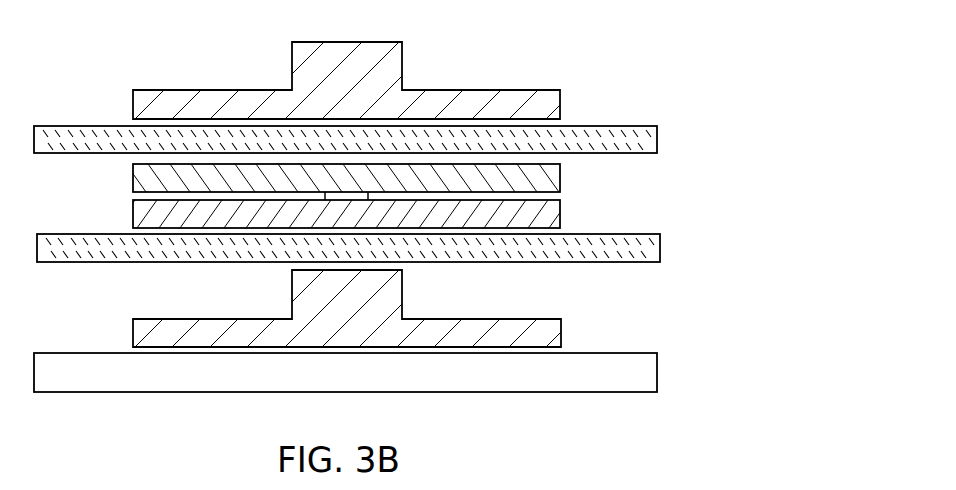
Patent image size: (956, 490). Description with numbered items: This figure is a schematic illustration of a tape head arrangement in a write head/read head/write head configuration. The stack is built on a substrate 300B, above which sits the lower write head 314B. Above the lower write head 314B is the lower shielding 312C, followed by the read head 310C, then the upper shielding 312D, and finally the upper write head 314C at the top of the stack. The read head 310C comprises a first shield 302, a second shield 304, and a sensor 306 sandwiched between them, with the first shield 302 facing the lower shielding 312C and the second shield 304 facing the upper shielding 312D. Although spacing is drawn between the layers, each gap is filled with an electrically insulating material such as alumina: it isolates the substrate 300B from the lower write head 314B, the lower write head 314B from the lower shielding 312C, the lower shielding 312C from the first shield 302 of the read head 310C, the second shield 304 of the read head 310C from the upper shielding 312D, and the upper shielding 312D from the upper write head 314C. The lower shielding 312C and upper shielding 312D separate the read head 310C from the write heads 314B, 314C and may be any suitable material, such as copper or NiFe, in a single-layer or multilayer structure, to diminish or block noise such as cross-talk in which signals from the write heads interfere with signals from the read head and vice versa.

The substrate 300B is at (482, 384).
The first shield 302 is at (135, 214).
The second shield 304 is at (135, 178).
The sensor 306 is at (331, 194).
The read head 310C is at (423, 232).
The lower shielding 312C is at (660, 249).
The upper shielding 312D is at (657, 140).
The lower write head 314B is at (561, 332).
The upper write head 314C is at (560, 104).